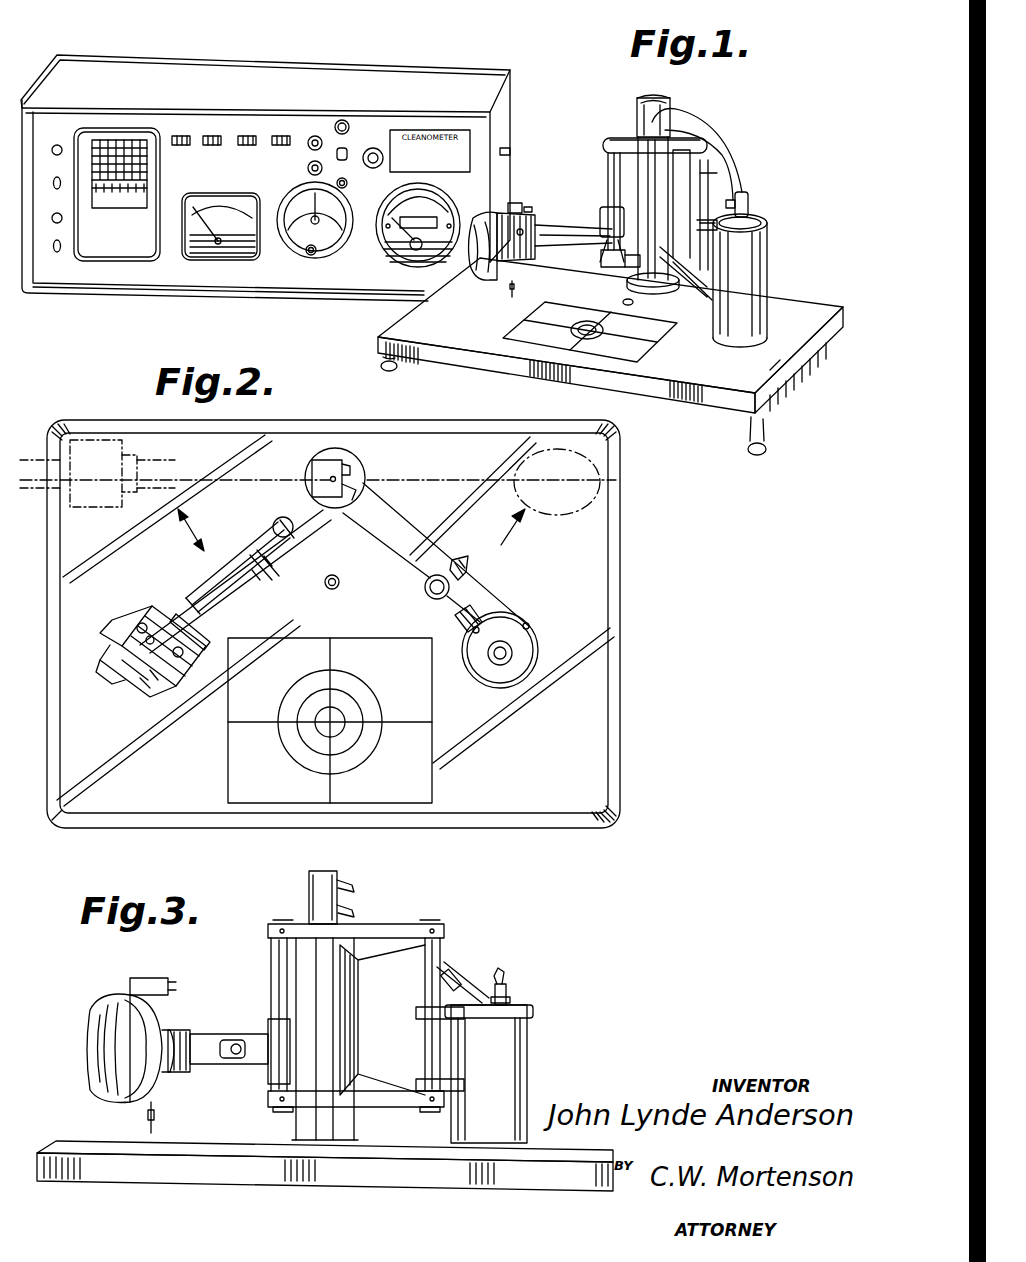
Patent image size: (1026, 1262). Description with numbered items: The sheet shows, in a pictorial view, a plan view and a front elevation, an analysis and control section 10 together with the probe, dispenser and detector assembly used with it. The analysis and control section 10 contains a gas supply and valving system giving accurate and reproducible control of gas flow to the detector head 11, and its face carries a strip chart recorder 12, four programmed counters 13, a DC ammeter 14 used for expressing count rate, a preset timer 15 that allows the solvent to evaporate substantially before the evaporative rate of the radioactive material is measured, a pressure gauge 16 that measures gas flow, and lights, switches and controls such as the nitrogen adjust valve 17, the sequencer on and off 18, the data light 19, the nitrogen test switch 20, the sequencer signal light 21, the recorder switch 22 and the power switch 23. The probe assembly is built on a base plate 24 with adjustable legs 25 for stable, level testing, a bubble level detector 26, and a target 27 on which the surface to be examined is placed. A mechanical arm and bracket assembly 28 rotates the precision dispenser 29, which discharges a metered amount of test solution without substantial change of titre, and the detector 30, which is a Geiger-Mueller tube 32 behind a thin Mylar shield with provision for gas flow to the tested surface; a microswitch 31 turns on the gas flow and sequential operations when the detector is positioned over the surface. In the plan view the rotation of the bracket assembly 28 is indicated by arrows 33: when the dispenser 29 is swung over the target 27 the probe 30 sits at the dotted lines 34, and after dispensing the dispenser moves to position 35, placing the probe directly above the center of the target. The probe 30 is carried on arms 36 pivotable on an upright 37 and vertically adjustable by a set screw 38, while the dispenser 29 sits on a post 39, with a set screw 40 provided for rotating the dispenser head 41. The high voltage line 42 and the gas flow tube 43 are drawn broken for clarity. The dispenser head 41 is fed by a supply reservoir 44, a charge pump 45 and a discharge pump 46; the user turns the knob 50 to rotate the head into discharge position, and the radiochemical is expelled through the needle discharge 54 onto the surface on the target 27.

In FIG. 1, the analysis and control section 10 is at (224, 307).
In FIG. 1, the detector head 11 is at (490, 378).
In FIG. 2, the detector head 11 is at (408, 838).
In FIG. 3, the detector head 11 is at (258, 1190).
In FIG. 1, the strip chart recorder 12 is at (140, 134).
In FIG. 1, the programmed counters 13 is at (281, 134).
In FIG. 1, the DC ammeter 14 is at (248, 250).
In FIG. 1, the preset timer 15 is at (326, 250).
In FIG. 1, the pressure gauge 16 is at (442, 221).
In FIG. 1, the nitrogen adjust valve 17 is at (510, 151).
In FIG. 1, the sequencer on and off 18 is at (347, 128).
In FIG. 1, the data light 19 is at (305, 136).
In FIG. 1, the nitrogen test switch 20 is at (376, 150).
In FIG. 1, the sequencer signal light 21 is at (308, 169).
In FIG. 1, the recorder switch 22 is at (57, 145).
In FIG. 1, the power switch 23 is at (62, 251).
In FIG. 1, the base plate 24 is at (798, 305).
In FIG. 3, the base plate 24 is at (612, 1151).
In FIG. 1, the adjustable legs 25 is at (381, 364).
In FIG. 1, the bubble level detector 26 is at (634, 303).
In FIG. 2, the bubble level detector 26 is at (335, 574).
In FIG. 1, the target 27 is at (652, 350).
In FIG. 2, the target 27 is at (362, 752).
In FIG. 1, the mechanical arm and bracket assembly 28 is at (626, 135).
In FIG. 2, the mechanical arm and bracket assembly 28 is at (300, 470).
In FIG. 3, the mechanical arm and bracket assembly 28 is at (300, 890).
In FIG. 1, the precision dispenser 29 is at (497, 290).
In FIG. 2, the precision dispenser 29 is at (126, 703).
In FIG. 3, the precision dispenser 29 is at (190, 1093).
In FIG. 1, the detector 30 is at (772, 252).
In FIG. 2, the detector 30 is at (540, 666).
In FIG. 3, the detector 30 is at (540, 1050).
In FIG. 1, the microswitch 31 is at (670, 112).
In FIG. 2, the microswitch 31 is at (352, 478).
In FIG. 3, the microswitch 31 is at (352, 885).
In FIG. 1, the Geiger-Mueller tube 32 is at (750, 202).
In FIG. 3, the Geiger-Mueller tube 32 is at (508, 994).
In FIG. 2, the arrows 33 is at (193, 525).
In FIG. 2, the dotted lines 34 is at (558, 510).
In FIG. 2, the position 35 is at (82, 508).
In FIG. 2, the arms 36 is at (396, 526).
In FIG. 3, the arms 36 is at (395, 926).
In FIG. 1, the upright 37 is at (707, 199).
In FIG. 2, the upright 37 is at (425, 591).
In FIG. 3, the upright 37 is at (445, 942).
In FIG. 2, the set screw 38 is at (468, 567).
In FIG. 1, the post 39 is at (608, 178).
In FIG. 2, the post 39 is at (285, 537).
In FIG. 3, the post 39 is at (272, 972).
In FIG. 1, the set screw 40 is at (568, 248).
In FIG. 2, the set screw 40 is at (254, 593).
In FIG. 3, the set screw 40 is at (254, 1043).
In FIG. 1, the dispenser head 41 is at (605, 238).
In FIG. 2, the dispenser head 41 is at (198, 637).
In FIG. 3, the dispenser head 41 is at (186, 1072).
In FIG. 1, the high voltage line 42 is at (735, 158).
In FIG. 2, the high voltage line 42 is at (490, 660).
In FIG. 3, the high voltage line 42 is at (504, 976).
In FIG. 1, the gas flow tube 43 is at (696, 140).
In FIG. 2, the gas flow tube 43 is at (452, 618).
In FIG. 3, the gas flow tube 43 is at (462, 982).
In FIG. 2, the supply reservoir 44 is at (140, 622).
In FIG. 1, the charge pump 45 is at (528, 207).
In FIG. 2, the charge pump 45 is at (148, 696).
In FIG. 3, the charge pump 45 is at (176, 1022).
In FIG. 1, the discharge pump 46 is at (531, 208).
In FIG. 2, the discharge pump 46 is at (180, 646).
In FIG. 1, the knob 50 is at (490, 275).
In FIG. 2, the knob 50 is at (110, 680).
In FIG. 3, the knob 50 is at (120, 1085).
In FIG. 1, the needle discharge 54 is at (516, 285).
In FIG. 3, the needle discharge 54 is at (156, 1125).